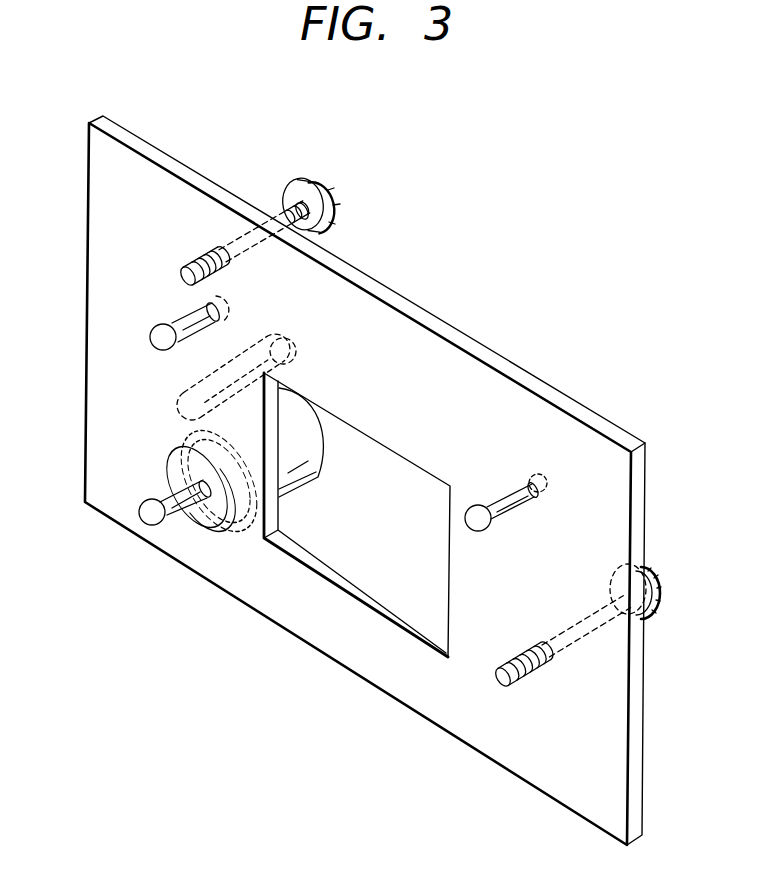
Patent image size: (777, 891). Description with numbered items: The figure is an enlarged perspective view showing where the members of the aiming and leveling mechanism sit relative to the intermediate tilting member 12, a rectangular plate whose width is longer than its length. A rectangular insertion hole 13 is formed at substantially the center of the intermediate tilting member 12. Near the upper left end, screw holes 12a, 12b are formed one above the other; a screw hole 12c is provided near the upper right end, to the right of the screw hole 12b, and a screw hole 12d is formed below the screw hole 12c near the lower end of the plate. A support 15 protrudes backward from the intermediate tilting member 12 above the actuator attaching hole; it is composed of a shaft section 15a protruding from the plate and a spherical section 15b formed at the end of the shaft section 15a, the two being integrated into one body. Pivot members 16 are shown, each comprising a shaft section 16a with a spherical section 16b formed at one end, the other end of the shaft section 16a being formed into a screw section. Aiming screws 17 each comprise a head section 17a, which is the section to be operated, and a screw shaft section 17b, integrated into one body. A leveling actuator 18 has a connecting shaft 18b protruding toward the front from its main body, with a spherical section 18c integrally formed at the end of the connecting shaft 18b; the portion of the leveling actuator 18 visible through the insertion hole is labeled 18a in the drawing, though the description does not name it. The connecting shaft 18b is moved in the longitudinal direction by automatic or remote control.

The intermediate tilting member 12 is at (474, 348).
The screw hole 12a is at (207, 255).
The screw hole 12b is at (212, 323).
The screw hole 12c is at (522, 500).
The screw hole 12d is at (550, 672).
The rectangular insertion hole 13 is at (410, 604).
The support 15 is at (250, 342).
The shaft section 15a is at (291, 349).
The spherical section 15b is at (296, 351).
The pivot member 16 is at (291, 443).
The shaft section 16a is at (192, 340).
The spherical section 16b is at (152, 340).
The aiming screw 17 is at (443, 428).
The head section 17a is at (308, 176).
The screw shaft section 17b is at (193, 257).
The leveling actuator 18 is at (156, 535).
The dial portion 18a is at (316, 478).
The connecting shaft 18b is at (190, 520).
The spherical section 18c is at (140, 518).